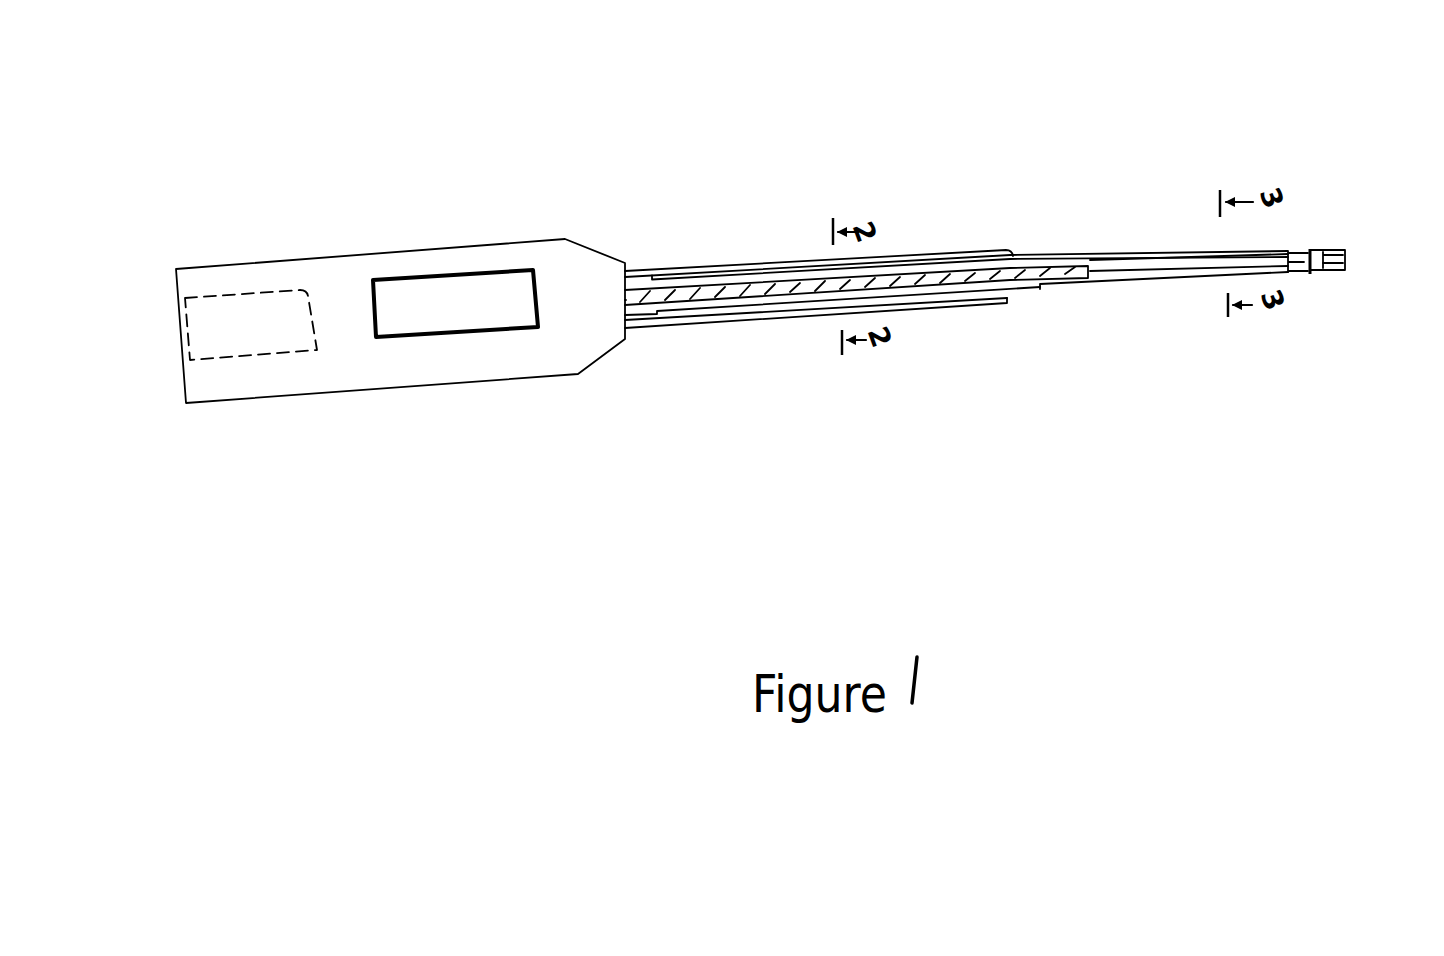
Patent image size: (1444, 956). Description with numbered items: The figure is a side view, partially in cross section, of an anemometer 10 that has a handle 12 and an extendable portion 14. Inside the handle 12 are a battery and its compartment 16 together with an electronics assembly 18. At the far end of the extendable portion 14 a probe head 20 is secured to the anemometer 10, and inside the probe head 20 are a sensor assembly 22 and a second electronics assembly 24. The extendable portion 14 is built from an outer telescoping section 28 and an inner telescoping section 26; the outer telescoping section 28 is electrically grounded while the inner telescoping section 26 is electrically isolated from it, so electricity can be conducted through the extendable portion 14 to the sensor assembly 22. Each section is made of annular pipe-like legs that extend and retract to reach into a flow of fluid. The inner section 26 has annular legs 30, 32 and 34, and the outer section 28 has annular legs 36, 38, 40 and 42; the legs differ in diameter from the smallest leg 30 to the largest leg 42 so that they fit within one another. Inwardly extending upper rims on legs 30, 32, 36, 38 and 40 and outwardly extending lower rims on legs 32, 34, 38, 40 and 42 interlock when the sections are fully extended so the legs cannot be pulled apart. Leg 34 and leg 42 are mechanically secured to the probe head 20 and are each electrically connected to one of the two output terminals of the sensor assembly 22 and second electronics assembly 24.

The anemometer 10 is at (663, 97).
The handle 12 is at (574, 241).
The extendable portion 14 is at (886, 225).
The battery and its compartment 16 is at (253, 297).
The electronics assembly 18 is at (460, 270).
The probe head 20 is at (1345, 247).
The sensor assembly 22 is at (1313, 273).
The second electronics assembly 24 is at (1327, 272).
The inner telescoping section 26 is at (1069, 279).
The outer telescoping section 28 is at (813, 320).
The annular leg 30 is at (990, 278).
The annular leg 32 is at (1190, 270).
The annular leg 34 is at (1228, 265).
The annular leg 36 is at (903, 252).
The annular leg 38 is at (1017, 252).
The annular leg 40 is at (1032, 253).
The annular leg 42 is at (1138, 257).